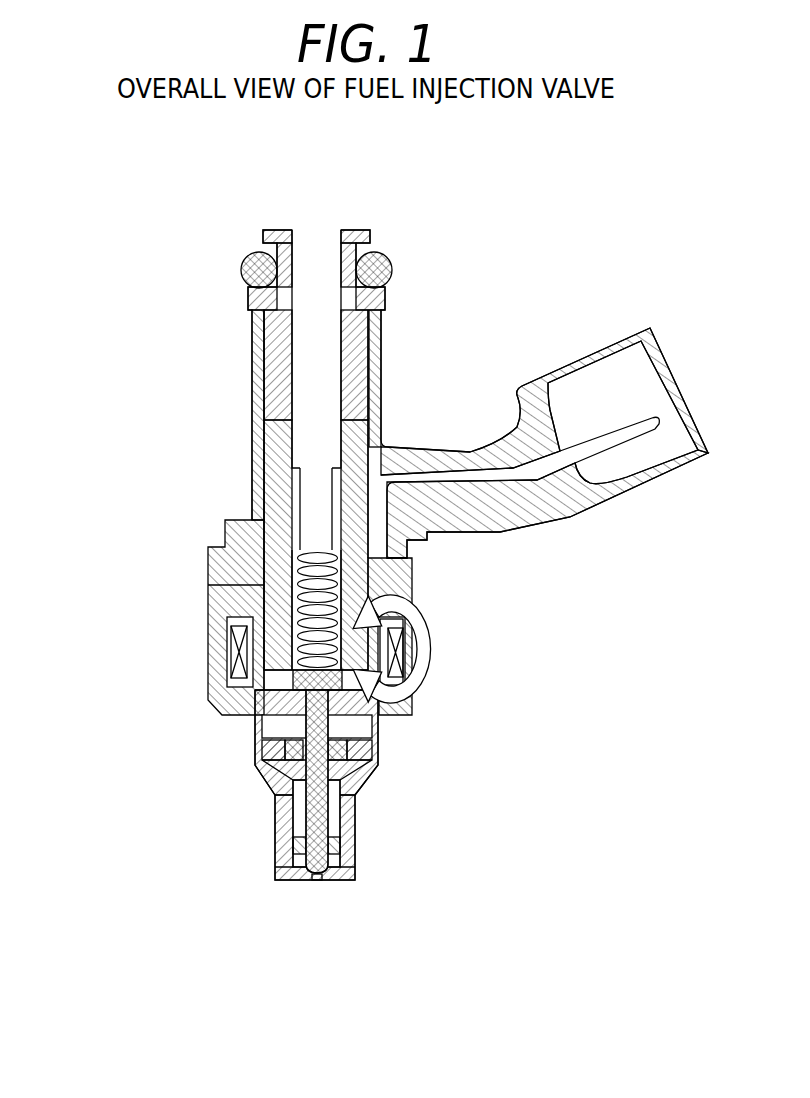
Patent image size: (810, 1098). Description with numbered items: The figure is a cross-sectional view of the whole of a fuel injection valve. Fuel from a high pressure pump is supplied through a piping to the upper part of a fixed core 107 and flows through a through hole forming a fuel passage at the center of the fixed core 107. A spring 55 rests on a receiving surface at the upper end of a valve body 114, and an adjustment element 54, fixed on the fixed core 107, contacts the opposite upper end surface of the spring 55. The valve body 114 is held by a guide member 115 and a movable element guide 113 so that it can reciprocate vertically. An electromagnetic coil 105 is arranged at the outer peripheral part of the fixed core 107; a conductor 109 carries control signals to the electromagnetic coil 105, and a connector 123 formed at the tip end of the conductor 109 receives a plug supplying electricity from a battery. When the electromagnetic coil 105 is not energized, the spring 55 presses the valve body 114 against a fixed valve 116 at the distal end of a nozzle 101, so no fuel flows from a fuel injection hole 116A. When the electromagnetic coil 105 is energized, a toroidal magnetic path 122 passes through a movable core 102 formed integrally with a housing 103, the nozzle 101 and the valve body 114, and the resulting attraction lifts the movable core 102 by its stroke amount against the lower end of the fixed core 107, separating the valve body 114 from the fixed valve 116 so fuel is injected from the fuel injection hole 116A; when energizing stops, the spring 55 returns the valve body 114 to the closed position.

The nozzle 101 is at (345, 845).
The movable core 102 is at (355, 700).
The housing 103 is at (210, 543).
The electromagnetic coil 105 is at (393, 652).
The fixed core 107 is at (278, 453).
The conductor 109 is at (468, 473).
The movable element guide 113 is at (263, 745).
The valve body 114 is at (315, 808).
The guide member 115 is at (296, 849).
The fixed valve 116 is at (303, 872).
The fuel injection hole 116A is at (318, 876).
The magnetic path 122 is at (430, 652).
The connector 123 is at (630, 478).
The adjustment element 54 is at (293, 507).
The spring 55 is at (297, 607).